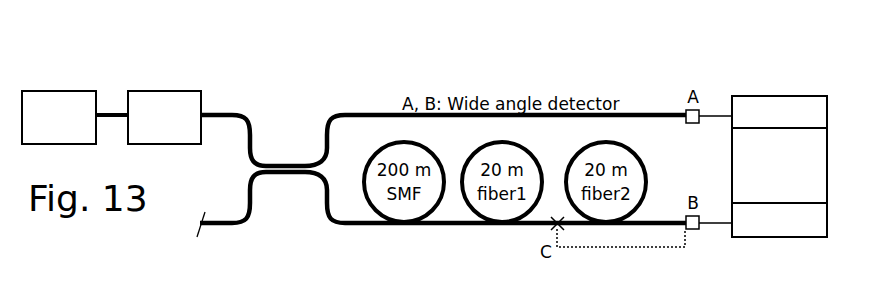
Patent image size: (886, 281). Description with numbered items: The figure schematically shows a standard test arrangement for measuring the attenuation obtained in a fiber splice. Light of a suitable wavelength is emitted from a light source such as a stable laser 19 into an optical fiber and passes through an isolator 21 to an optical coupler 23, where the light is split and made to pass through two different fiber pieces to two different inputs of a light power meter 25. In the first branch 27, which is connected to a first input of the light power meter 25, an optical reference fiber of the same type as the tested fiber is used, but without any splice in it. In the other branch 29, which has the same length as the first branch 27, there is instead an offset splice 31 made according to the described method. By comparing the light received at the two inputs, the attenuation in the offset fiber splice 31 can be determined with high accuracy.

The stable laser 19 is at (57, 90).
The isolator 21 is at (162, 90).
The optical coupler 23 is at (309, 155).
The light power meter 25 is at (827, 163).
The first branch 27 is at (390, 112).
The other branch 29 is at (365, 227).
The offset splice 31 is at (553, 228).